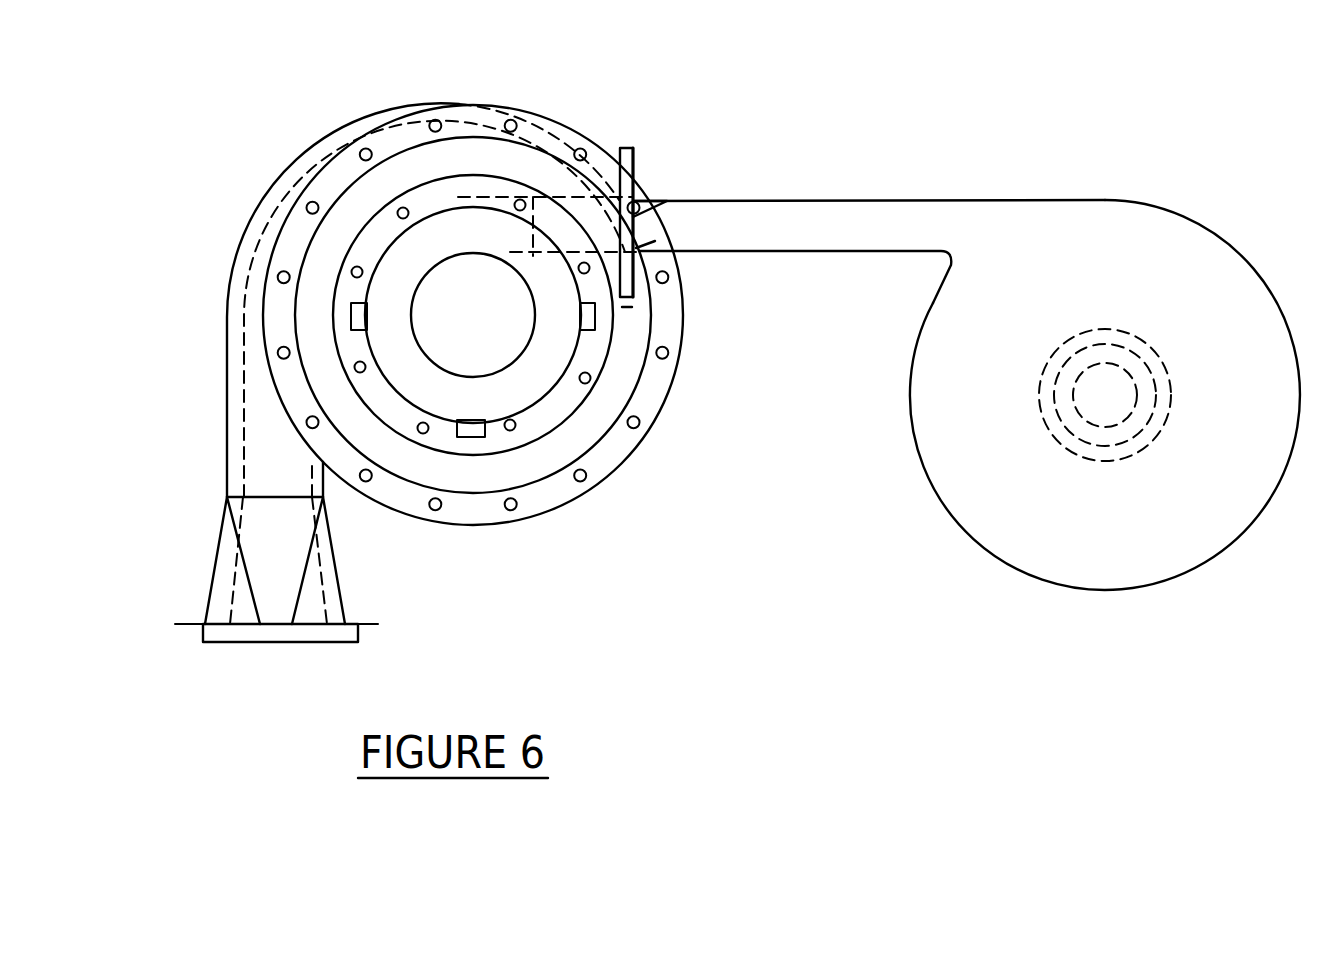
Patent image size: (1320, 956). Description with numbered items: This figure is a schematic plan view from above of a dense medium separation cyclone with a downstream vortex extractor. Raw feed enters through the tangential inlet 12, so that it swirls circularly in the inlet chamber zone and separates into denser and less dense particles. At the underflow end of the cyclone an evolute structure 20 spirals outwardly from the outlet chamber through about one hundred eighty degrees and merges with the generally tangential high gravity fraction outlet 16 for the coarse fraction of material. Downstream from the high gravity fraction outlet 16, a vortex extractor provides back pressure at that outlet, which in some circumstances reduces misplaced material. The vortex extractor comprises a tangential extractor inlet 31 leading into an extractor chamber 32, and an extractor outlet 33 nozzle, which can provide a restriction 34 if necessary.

The tangential inlet 12 is at (262, 467).
The high gravity fraction outlet 16 is at (597, 130).
The evolute structure 20 is at (458, 197).
The tangential extractor inlet 31 is at (981, 237).
The extractor chamber 32 is at (1162, 275).
The extractor outlet nozzle 33 is at (1112, 402).
The restriction 34 is at (1103, 400).